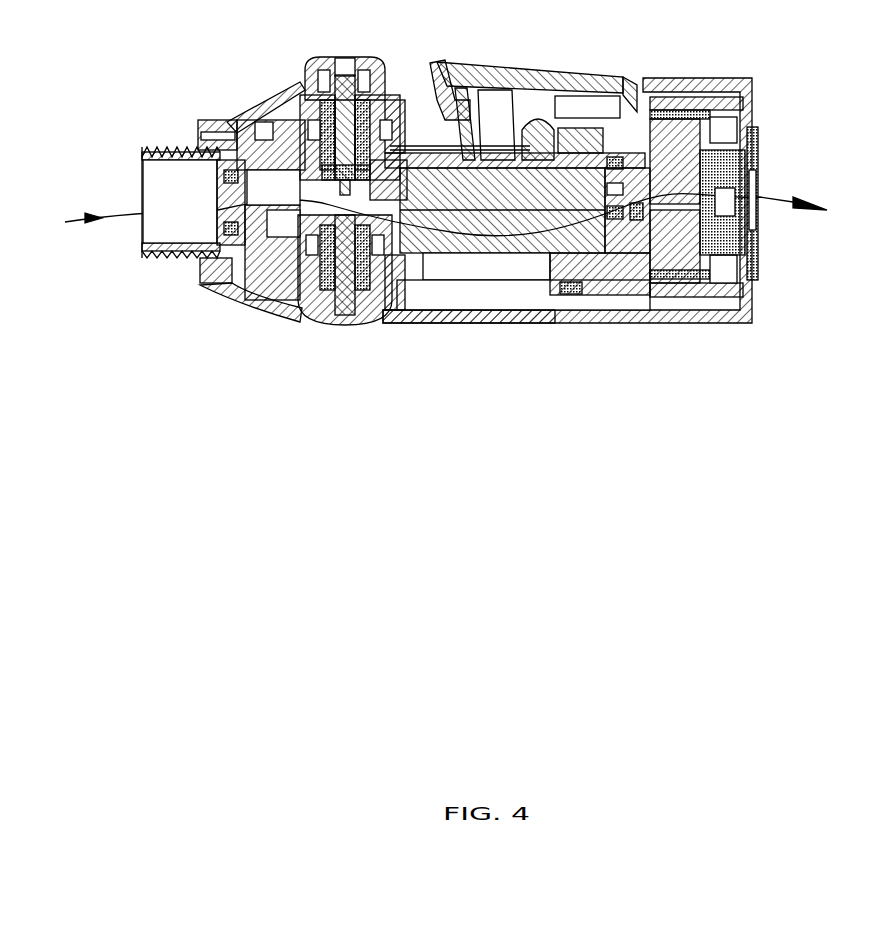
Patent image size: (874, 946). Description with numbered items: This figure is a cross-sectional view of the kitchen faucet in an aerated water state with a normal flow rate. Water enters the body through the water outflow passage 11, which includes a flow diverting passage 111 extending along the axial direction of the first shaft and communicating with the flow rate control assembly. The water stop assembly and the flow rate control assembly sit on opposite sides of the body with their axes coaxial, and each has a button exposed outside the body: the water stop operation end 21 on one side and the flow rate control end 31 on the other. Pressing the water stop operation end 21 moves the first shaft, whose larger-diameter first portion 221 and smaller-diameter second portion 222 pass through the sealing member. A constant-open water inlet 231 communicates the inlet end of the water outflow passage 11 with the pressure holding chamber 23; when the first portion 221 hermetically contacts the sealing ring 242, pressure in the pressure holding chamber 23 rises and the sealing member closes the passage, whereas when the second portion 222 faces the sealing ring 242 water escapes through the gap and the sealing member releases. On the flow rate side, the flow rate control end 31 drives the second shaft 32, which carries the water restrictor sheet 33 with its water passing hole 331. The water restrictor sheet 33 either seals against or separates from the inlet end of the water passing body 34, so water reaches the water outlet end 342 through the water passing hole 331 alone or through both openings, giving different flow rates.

The water outflow passage 11 is at (127, 225).
The flow diverting passage 111 is at (163, 110).
The water stop operation end 21 is at (343, 327).
The first portion 221 is at (436, 321).
The second portion 222 is at (469, 338).
The pressure holding chamber 23 is at (258, 232).
The constant-open water inlet 231 is at (209, 299).
The sealing ring 242 is at (307, 313).
The flow rate control end 31 is at (356, 58).
The second shaft 32 is at (327, 60).
The water restrictor sheet 33 is at (320, 143).
The water passing hole 331 is at (358, 170).
The water passing body 34 is at (421, 73).
The water outlet end 342 is at (430, 93).